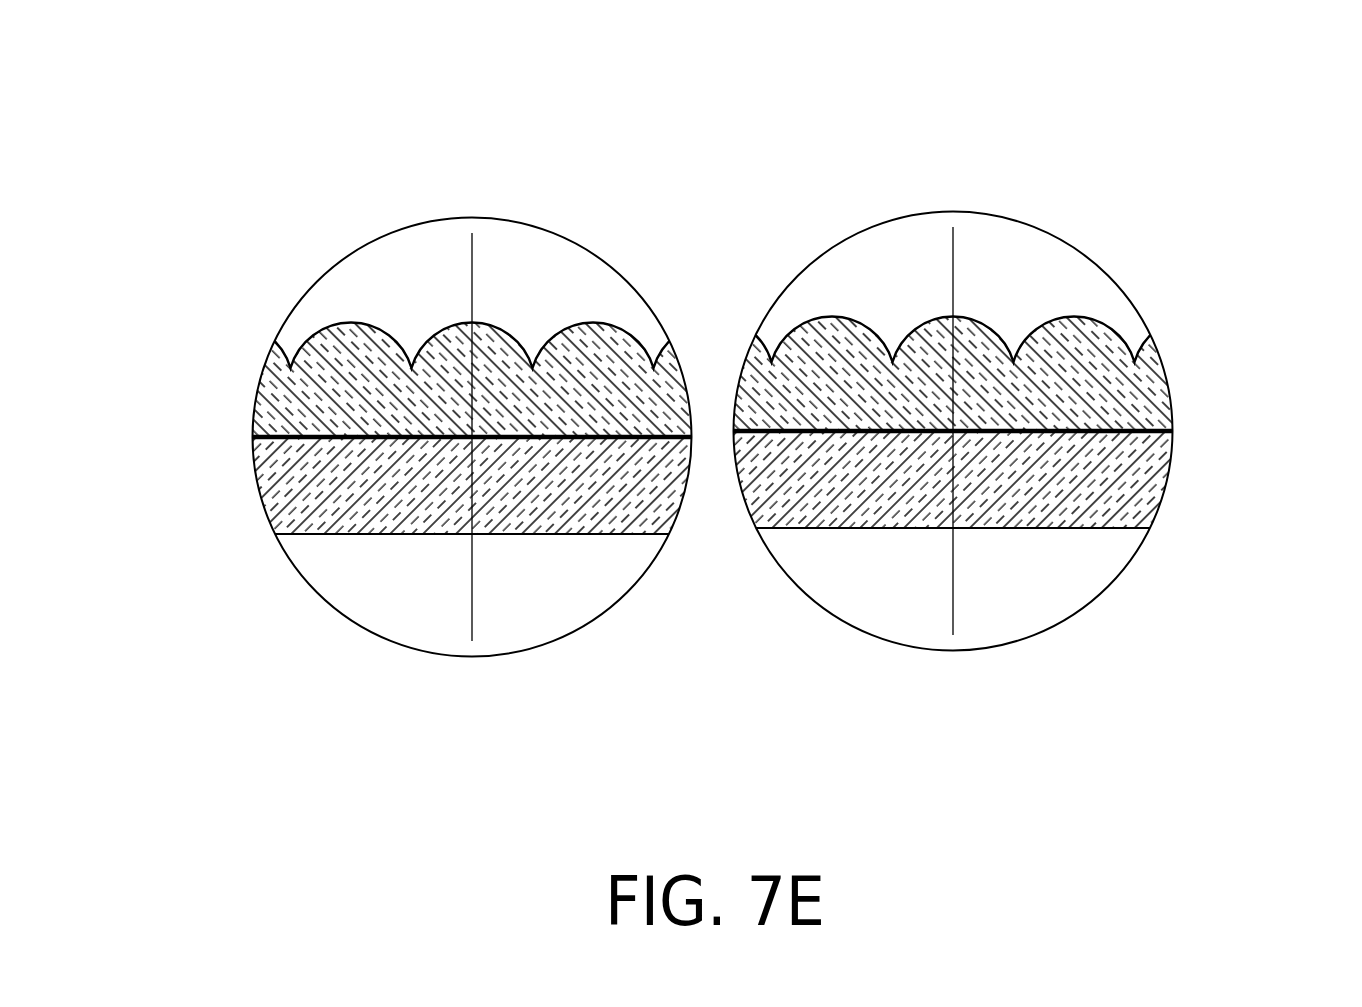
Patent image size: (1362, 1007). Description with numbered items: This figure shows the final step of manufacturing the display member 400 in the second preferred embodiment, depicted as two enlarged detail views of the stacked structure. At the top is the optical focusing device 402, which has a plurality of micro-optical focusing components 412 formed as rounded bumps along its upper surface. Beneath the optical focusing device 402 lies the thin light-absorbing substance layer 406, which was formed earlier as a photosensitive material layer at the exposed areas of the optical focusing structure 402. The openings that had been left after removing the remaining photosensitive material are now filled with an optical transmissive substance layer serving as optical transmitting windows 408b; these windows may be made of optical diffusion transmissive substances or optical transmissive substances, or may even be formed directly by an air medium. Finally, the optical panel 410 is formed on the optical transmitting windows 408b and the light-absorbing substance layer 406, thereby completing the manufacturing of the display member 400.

The display member 400 is at (161, 73).
The optical focusing device 402 is at (624, 410).
The light-absorbing substance layer 406 is at (353, 438).
The optical transmitting windows 408b is at (350, 438).
The optical panel 410 is at (345, 528).
The micro-optical focusing components 412 is at (342, 357).